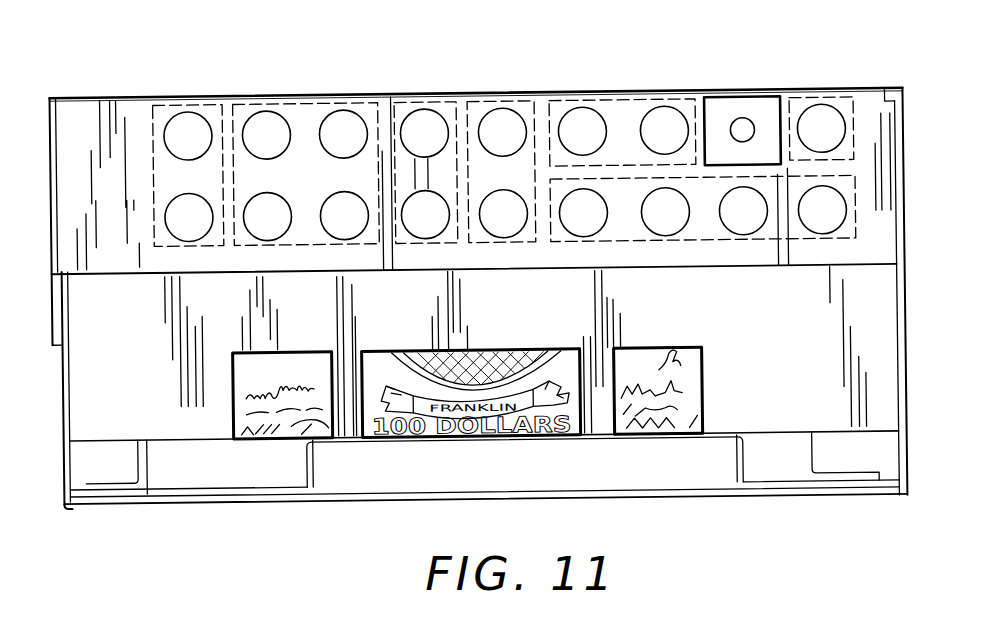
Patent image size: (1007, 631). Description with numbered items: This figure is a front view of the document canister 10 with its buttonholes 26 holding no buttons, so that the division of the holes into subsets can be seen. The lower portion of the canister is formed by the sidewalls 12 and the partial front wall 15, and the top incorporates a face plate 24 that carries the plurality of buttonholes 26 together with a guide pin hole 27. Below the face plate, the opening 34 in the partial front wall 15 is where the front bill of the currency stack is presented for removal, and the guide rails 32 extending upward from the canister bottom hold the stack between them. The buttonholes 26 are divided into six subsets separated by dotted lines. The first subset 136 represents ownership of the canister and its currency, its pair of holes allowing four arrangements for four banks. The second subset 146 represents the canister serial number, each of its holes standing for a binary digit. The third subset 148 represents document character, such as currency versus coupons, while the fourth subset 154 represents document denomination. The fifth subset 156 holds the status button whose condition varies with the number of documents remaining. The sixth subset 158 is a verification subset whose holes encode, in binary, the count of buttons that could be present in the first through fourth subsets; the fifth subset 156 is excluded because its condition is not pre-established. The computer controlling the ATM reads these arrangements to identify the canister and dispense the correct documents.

The document canister 10 is at (306, 75).
The sidewalls 12 is at (58, 465).
The partial front wall 15 is at (146, 385).
The face plate 24 is at (867, 138).
The buttonholes 26 is at (269, 100).
The guide pin hole 27 is at (742, 120).
The guide rails 32 is at (145, 458).
The opening 34 is at (709, 388).
The first subset 136 is at (177, 99).
The second subset 146 is at (412, 101).
The third subset 148 is at (500, 100).
The fourth subset 154 is at (662, 102).
The fifth subset 156 is at (832, 101).
The sixth subset 158 is at (748, 248).